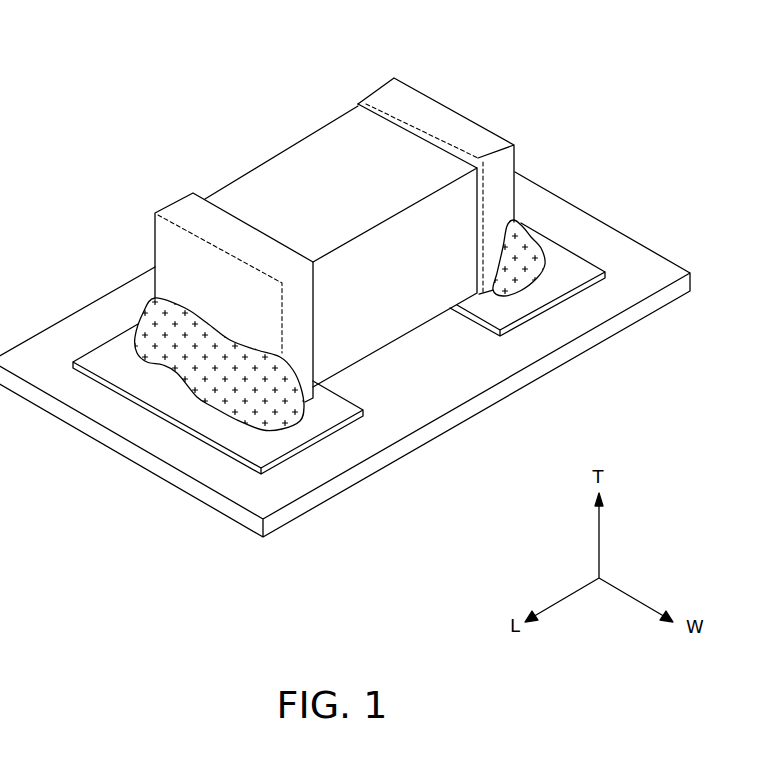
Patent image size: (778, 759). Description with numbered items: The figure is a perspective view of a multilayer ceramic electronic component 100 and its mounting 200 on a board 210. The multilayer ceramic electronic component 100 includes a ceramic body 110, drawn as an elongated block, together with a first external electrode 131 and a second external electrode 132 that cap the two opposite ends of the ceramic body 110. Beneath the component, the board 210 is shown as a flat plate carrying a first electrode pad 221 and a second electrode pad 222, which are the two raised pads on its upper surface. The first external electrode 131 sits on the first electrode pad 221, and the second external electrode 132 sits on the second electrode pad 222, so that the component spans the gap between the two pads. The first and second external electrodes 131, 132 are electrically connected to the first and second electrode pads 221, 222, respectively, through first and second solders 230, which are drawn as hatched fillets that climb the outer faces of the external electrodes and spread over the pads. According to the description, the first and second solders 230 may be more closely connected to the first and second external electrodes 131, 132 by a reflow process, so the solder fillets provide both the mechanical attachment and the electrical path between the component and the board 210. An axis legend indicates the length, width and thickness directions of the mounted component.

The mounting 200 is at (113, 47).
The multilayer ceramic electronic component 100 is at (320, 214).
The ceramic body 110 is at (290, 168).
The first external electrode 131 is at (187, 217).
The second external electrode 132 is at (308, 131).
The board 210 is at (453, 378).
The first electrode pad 221 is at (310, 425).
The second electrode pad 222 is at (553, 283).
The first and second solders 230 is at (202, 360).